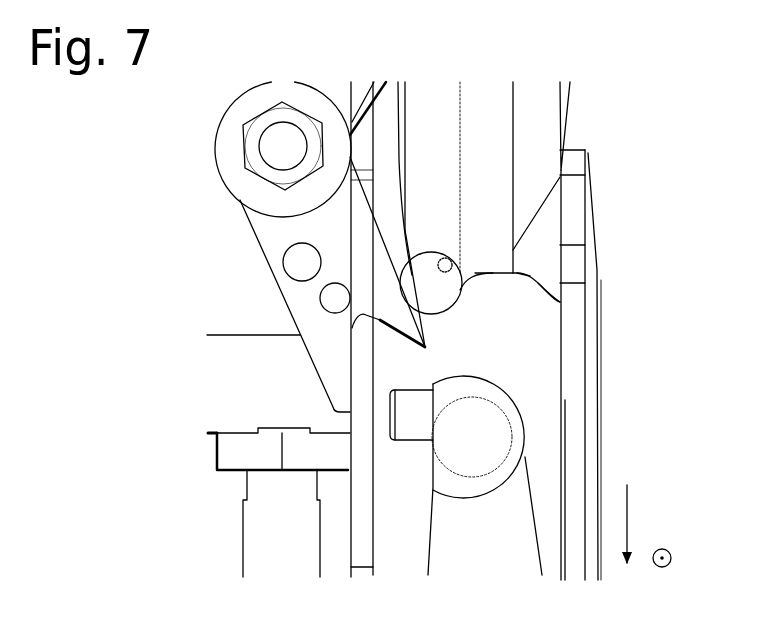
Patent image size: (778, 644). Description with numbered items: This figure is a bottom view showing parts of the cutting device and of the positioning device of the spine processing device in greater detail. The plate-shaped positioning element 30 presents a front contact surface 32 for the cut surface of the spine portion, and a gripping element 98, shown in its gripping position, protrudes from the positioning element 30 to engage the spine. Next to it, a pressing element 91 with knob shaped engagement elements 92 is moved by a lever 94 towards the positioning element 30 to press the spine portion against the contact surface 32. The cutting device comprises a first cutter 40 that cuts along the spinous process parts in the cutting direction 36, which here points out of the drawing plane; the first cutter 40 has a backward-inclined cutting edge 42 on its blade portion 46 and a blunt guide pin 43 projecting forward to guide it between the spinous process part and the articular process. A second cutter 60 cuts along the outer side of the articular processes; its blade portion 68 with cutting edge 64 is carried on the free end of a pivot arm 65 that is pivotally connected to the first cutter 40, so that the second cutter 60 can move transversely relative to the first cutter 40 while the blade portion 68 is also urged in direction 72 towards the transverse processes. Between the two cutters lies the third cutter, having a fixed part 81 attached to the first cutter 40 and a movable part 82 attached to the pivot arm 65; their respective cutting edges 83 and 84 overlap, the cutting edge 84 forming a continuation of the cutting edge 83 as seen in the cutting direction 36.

The positioning element 30 is at (362, 557).
The front contact surface 32 is at (377, 538).
The cutting direction 36 is at (672, 557).
The first cutter 40 is at (391, 207).
The cutting edge 42 is at (409, 132).
The guide pin 43 is at (431, 293).
The blade portion 46 is at (483, 176).
The second cutter 60 is at (634, 323).
The cutting edge 64 is at (569, 437).
The pivot arm 65 is at (547, 122).
The blade portion 68 is at (590, 382).
The direction 72 is at (627, 510).
The fixed part 81 is at (479, 294).
The movable part 82 is at (547, 305).
The cutting edge 83 is at (490, 280).
The cutting edge 84 is at (533, 280).
The pressing element 91 is at (545, 453).
The knob shaped engagement element 92 is at (415, 420).
The lever 94 is at (466, 551).
The gripping element 98 is at (389, 351).